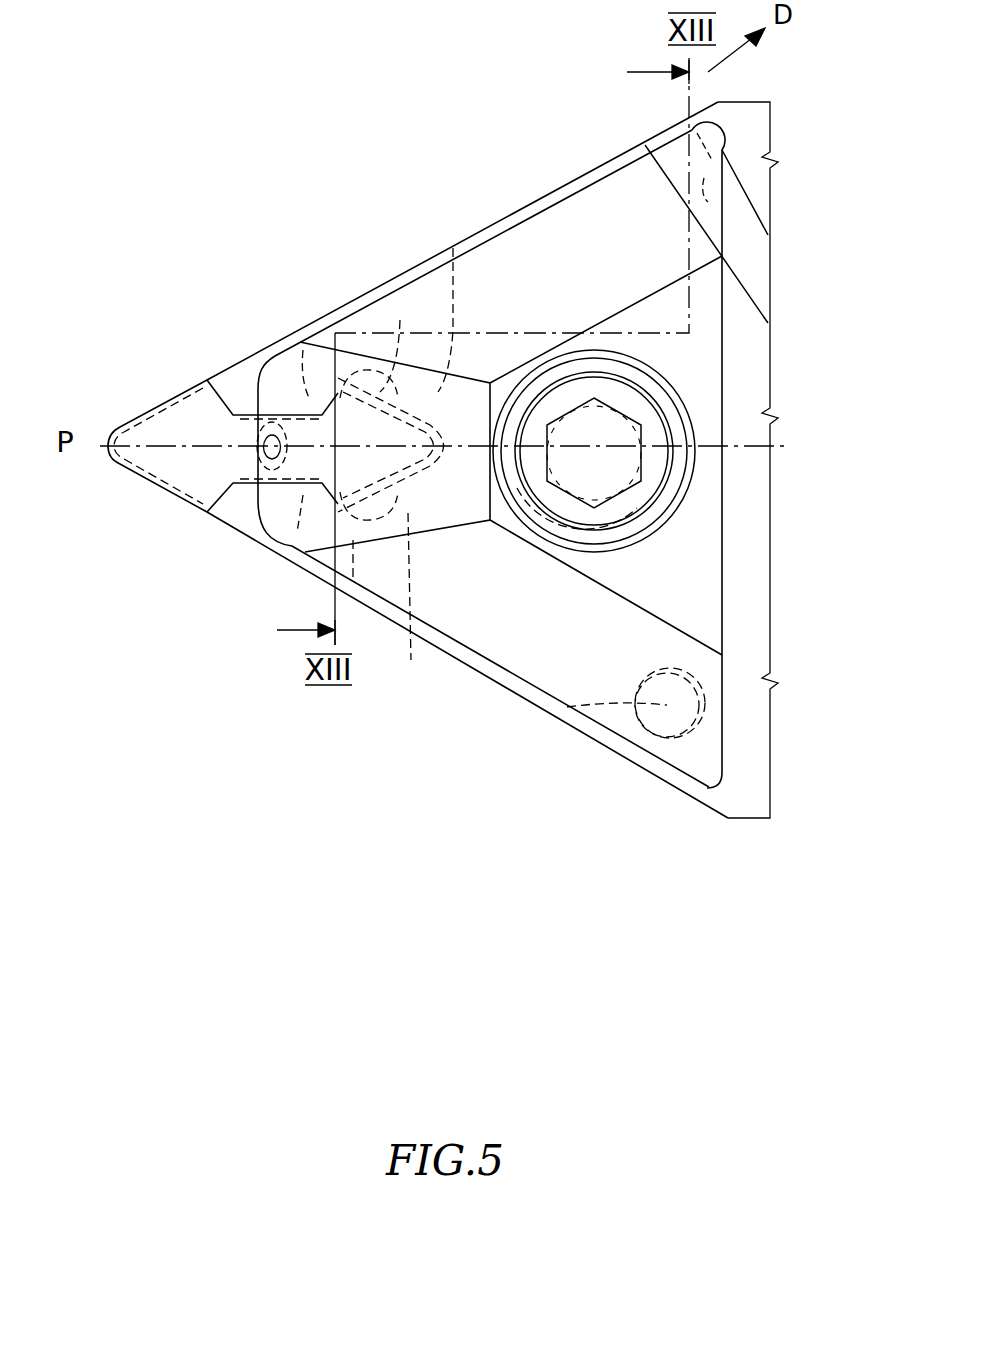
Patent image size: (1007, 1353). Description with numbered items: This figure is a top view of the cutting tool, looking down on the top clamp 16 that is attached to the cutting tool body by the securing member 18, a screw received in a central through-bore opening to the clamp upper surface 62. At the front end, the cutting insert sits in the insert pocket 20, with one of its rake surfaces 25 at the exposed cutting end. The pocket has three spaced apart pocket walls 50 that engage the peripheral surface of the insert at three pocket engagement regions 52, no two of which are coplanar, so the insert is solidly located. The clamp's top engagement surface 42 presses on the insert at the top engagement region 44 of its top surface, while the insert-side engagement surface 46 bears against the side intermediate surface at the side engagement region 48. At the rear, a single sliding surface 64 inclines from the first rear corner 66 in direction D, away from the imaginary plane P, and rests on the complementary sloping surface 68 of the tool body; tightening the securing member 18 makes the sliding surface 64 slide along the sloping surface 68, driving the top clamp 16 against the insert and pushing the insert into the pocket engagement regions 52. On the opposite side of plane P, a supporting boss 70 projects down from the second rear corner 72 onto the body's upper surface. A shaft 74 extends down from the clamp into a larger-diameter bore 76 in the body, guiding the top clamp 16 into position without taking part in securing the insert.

The top clamp 16 is at (601, 239).
The securing member 18 is at (633, 408).
The insert pocket 20 is at (453, 248).
The rake surface 25 is at (165, 458).
The top engagement surface 42 is at (272, 353).
The top engagement region 44 is at (246, 410).
The insert-side engagement surface 46 is at (413, 608).
The side engagement region 48 is at (293, 540).
The pocket wall 50 is at (400, 320).
The pocket engagement region 52 is at (300, 342).
The clamp upper surface 62 is at (612, 567).
The sliding surface 64 is at (712, 205).
The first rear corner 66 is at (684, 110).
The sloping surface 68 is at (737, 233).
The supporting boss 70 is at (690, 778).
The second rear corner 72 is at (715, 795).
The shaft 74 is at (567, 707).
The bore 76 is at (690, 752).